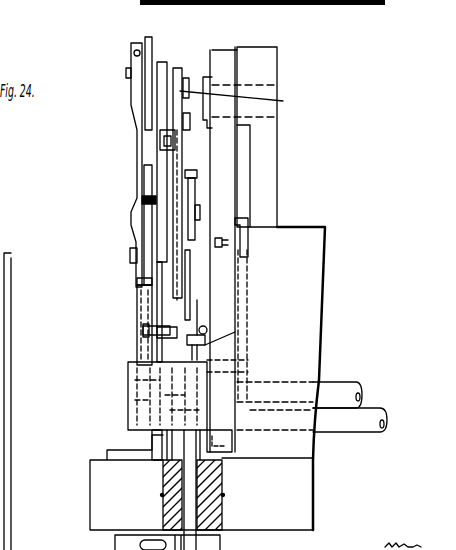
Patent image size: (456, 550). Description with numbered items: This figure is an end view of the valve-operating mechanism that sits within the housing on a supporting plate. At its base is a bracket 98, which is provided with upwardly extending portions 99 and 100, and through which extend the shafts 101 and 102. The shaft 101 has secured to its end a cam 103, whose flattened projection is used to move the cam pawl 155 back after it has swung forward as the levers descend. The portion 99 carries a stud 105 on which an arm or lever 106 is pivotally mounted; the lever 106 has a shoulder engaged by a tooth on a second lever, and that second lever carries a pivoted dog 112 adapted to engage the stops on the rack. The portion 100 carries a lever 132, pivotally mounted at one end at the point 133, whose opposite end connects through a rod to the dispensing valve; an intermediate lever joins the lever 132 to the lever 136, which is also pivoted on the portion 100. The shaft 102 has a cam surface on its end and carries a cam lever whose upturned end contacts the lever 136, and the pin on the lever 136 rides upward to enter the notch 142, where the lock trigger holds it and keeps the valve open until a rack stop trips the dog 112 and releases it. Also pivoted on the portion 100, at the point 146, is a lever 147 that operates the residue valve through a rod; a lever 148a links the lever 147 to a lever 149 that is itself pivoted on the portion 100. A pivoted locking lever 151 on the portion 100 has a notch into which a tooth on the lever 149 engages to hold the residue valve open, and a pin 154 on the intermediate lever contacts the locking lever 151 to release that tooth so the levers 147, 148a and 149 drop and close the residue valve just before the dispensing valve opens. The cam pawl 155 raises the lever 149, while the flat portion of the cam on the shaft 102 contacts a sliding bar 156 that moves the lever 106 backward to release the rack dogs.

The bracket 98 is at (322, 246).
The upwardly extending portion 99 is at (250, 50).
The upwardly extending portion 100 is at (163, 117).
The shaft 101 is at (334, 380).
The shaft 102 is at (378, 402).
The cam 103 is at (132, 393).
The stud 105 is at (201, 85).
The arm or lever 106 is at (222, 150).
The pivoted dog 112 is at (200, 320).
The lever 132 is at (155, 161).
The pivot point 133 is at (247, 103).
The lever 136 is at (173, 350).
The notch 142 is at (137, 262).
The pivot point 146 is at (160, 122).
The lever 147 is at (148, 58).
The lever 148a is at (152, 200).
The lever 149 is at (138, 281).
The locking lever 151 is at (148, 160).
The pin 154 is at (175, 206).
The cam pawl 155 is at (140, 322).
The sliding bar 156 is at (296, 3).